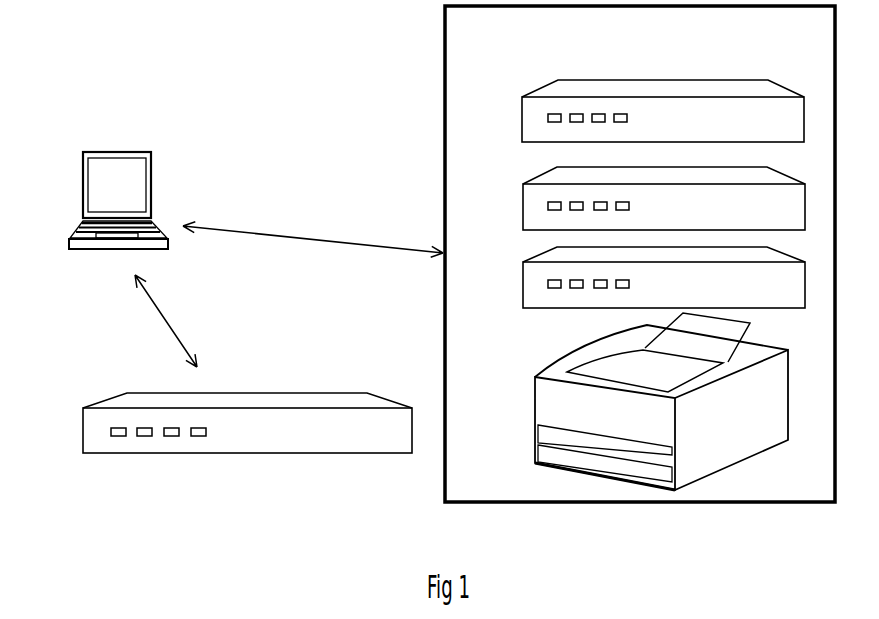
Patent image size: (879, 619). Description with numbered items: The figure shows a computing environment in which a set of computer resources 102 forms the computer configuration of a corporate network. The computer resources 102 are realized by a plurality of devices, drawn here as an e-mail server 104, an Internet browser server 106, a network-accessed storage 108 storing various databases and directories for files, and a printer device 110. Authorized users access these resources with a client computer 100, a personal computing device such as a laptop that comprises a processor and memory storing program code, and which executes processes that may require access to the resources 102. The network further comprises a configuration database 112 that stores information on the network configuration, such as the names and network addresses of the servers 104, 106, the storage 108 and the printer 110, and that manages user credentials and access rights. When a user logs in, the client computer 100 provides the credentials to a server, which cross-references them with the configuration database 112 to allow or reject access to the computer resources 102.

The client computer 100 is at (72, 237).
The computer resources 102 is at (640, 254).
The e-mail server 104 is at (522, 98).
The Internet browser server 106 is at (523, 187).
The network-accessed storage 108 is at (523, 265).
The printer device 110 is at (535, 393).
The configuration database 112 is at (83, 420).